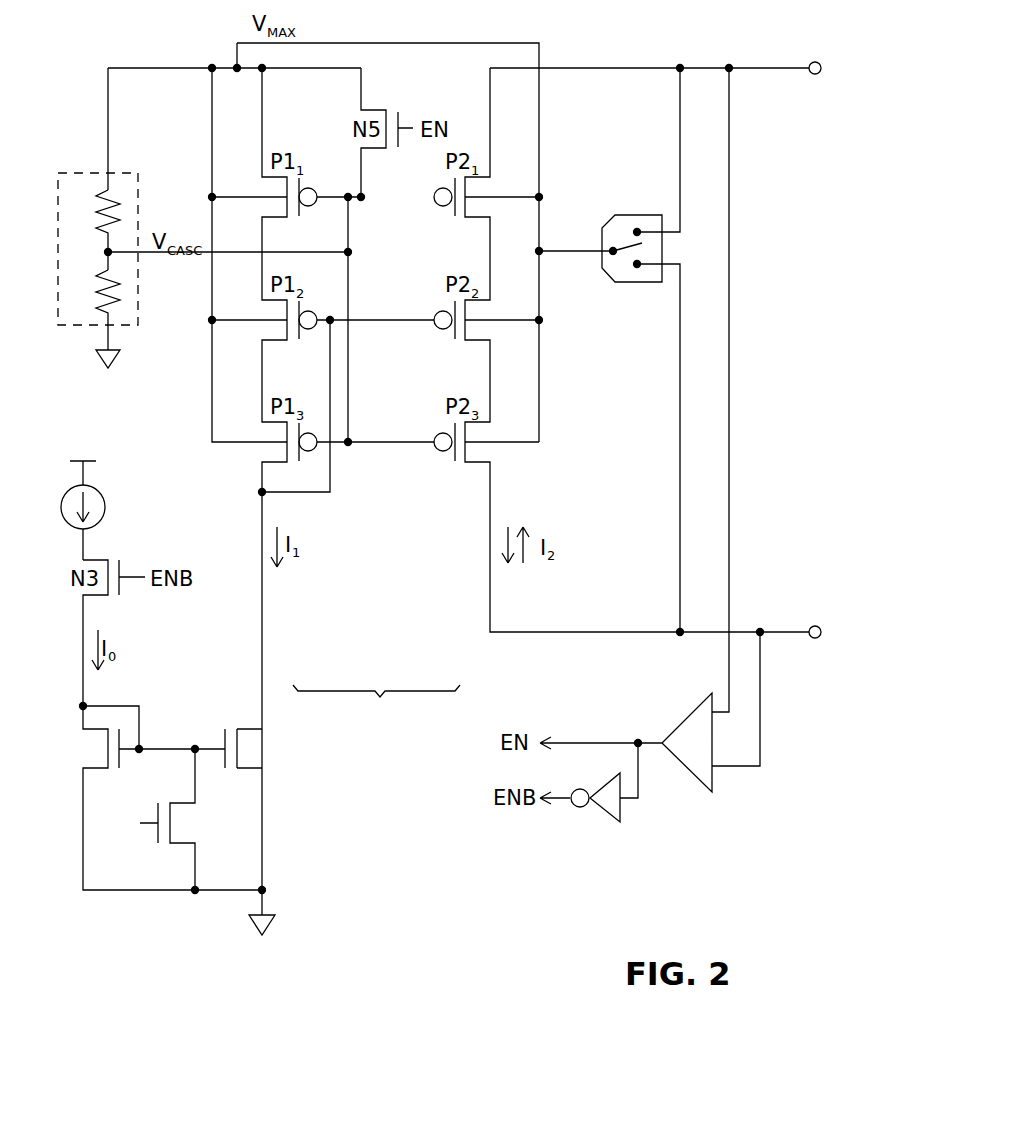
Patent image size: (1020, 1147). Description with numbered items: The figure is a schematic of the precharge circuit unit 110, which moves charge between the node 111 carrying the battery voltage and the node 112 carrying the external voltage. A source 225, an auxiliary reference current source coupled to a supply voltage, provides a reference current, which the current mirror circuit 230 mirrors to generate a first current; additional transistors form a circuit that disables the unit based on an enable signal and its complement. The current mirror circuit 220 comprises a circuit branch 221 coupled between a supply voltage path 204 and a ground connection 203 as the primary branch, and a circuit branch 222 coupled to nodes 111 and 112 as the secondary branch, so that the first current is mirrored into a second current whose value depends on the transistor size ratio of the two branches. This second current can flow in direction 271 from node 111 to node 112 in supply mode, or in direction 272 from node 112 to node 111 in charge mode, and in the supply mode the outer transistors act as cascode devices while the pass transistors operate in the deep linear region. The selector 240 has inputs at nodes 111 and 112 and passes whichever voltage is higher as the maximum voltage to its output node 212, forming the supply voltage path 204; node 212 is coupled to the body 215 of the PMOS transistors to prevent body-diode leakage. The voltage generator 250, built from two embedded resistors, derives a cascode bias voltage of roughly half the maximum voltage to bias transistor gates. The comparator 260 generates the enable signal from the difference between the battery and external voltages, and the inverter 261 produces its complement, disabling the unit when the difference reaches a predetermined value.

The precharge circuit unit 110 is at (692, 942).
The node 111 is at (813, 62).
The node 112 is at (814, 638).
The ground connection 203 is at (271, 921).
The supply voltage path 204 is at (412, 43).
The node 212 is at (575, 255).
The body 215 is at (246, 196).
The current mirror circuit 220 is at (376, 701).
The circuit branch 221 is at (303, 628).
The circuit branch 222 is at (458, 630).
The source 225 is at (103, 497).
The current mirror circuit 230 is at (238, 958).
The selector 240 is at (631, 214).
The voltage generator 250 is at (80, 172).
The comparator 260 is at (676, 720).
The inverter 261 is at (604, 816).
The direction 271 is at (509, 527).
The direction 272 is at (522, 576).